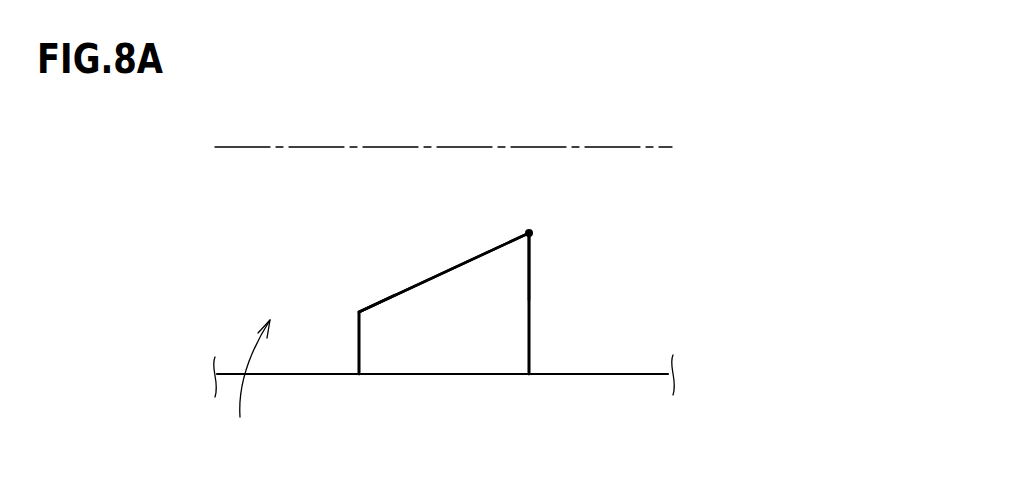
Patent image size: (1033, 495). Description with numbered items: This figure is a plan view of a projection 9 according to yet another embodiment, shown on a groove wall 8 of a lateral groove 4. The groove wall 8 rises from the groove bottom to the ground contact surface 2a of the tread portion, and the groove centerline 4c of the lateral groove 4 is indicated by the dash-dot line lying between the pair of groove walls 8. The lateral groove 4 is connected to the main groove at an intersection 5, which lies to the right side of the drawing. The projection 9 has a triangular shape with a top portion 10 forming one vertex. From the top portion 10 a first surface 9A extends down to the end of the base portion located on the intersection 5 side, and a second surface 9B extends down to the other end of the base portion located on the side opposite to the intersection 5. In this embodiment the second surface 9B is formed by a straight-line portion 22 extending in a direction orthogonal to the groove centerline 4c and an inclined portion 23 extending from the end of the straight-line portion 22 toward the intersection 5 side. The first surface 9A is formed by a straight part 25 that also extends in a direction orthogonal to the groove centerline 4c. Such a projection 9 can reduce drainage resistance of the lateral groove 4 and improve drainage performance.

The ground contact surface 2a is at (190, 433).
The lateral groove 4 is at (251, 384).
The groove centerline 4c is at (642, 147).
The intersection 5 is at (706, 273).
The groove wall 8 is at (643, 377).
The projection 9 is at (439, 333).
The first surface 9A is at (529, 329).
The second surface 9B is at (453, 267).
The top portion 10 is at (533, 231).
The straight-line portion 22 is at (359, 343).
The inclined portion 23 is at (393, 294).
The straight part 25 is at (529, 287).